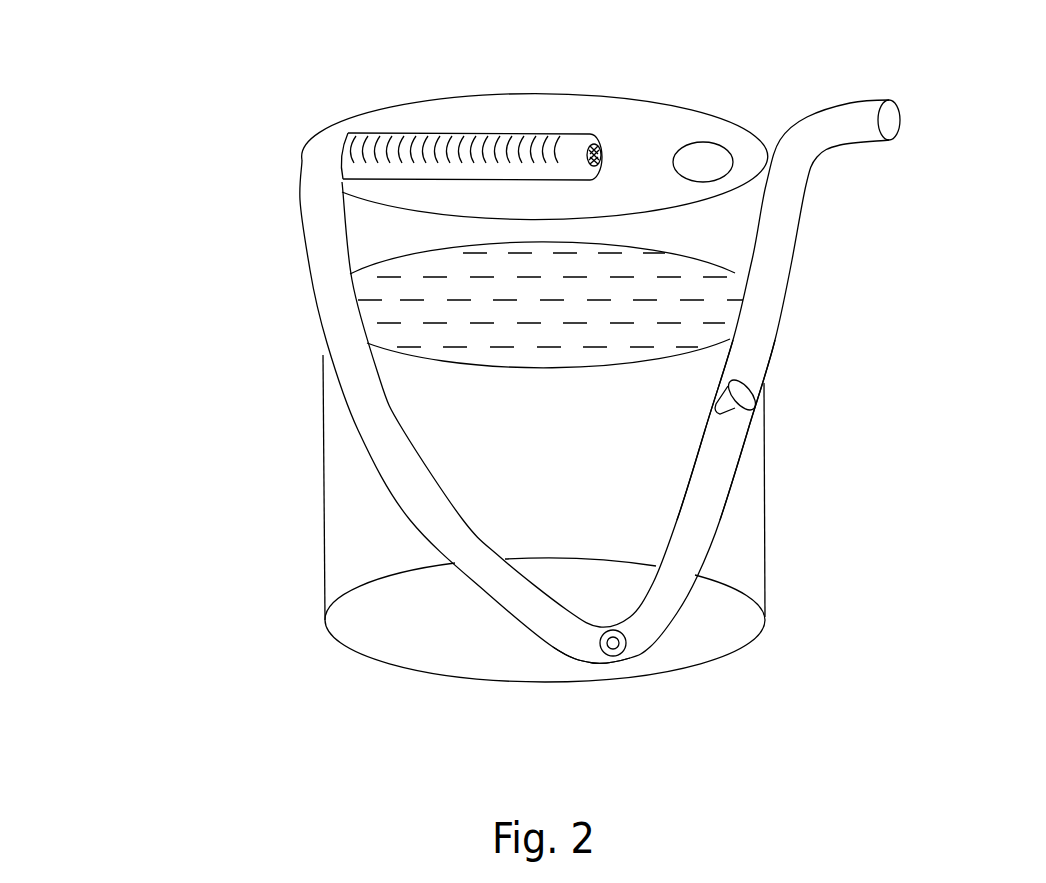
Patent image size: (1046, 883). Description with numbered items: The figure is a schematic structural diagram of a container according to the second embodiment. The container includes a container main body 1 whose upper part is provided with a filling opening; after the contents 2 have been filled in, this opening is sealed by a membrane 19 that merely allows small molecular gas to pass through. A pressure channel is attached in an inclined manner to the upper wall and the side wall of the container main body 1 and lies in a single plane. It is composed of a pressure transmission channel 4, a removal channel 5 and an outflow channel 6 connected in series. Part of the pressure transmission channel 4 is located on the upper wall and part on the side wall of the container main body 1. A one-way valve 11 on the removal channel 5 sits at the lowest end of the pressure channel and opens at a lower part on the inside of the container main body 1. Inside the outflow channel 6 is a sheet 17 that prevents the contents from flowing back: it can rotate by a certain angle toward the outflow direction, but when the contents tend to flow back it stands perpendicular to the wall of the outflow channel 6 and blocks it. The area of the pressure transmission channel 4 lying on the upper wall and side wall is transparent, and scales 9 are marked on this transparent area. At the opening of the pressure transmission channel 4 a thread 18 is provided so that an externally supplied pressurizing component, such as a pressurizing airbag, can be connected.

The container main body 1 is at (535, 353).
The contents 2 is at (615, 327).
The pressure transmission channel 4 is at (350, 363).
The removal channel 5 is at (569, 691).
The outflow channel 6 is at (772, 430).
The scales 9 is at (465, 92).
The one-way valve 11 is at (645, 676).
The sheet 17 is at (777, 376).
The thread 18 is at (618, 102).
The membrane 19 is at (760, 110).